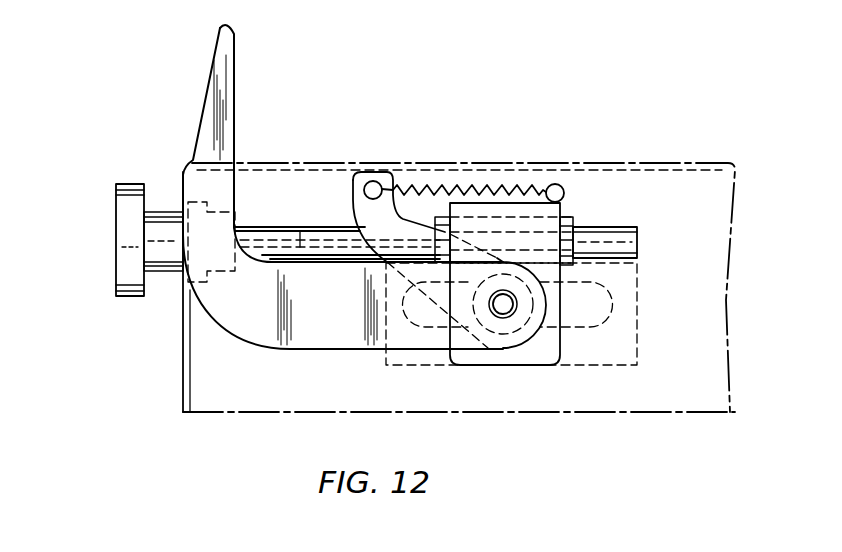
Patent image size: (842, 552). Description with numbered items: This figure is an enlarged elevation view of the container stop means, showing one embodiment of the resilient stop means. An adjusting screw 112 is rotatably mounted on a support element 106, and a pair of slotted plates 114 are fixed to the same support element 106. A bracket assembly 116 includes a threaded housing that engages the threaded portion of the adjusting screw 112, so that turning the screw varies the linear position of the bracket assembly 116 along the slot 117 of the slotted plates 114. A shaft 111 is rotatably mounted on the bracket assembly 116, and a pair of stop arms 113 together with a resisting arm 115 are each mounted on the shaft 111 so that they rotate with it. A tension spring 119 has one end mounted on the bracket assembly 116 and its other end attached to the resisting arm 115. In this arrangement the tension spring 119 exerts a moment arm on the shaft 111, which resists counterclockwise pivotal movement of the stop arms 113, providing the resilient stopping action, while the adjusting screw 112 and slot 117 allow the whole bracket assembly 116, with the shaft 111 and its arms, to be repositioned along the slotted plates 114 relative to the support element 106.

The support element 106 is at (227, 413).
The shaft 111 is at (500, 308).
The adjusting screw 112 is at (116, 281).
The stop arms 113 is at (198, 127).
The slotted plates 114 is at (620, 367).
The resisting arm 115 is at (423, 173).
The bracket assembly 116 is at (592, 162).
The slot 117 is at (612, 298).
The tension spring 119 is at (519, 185).